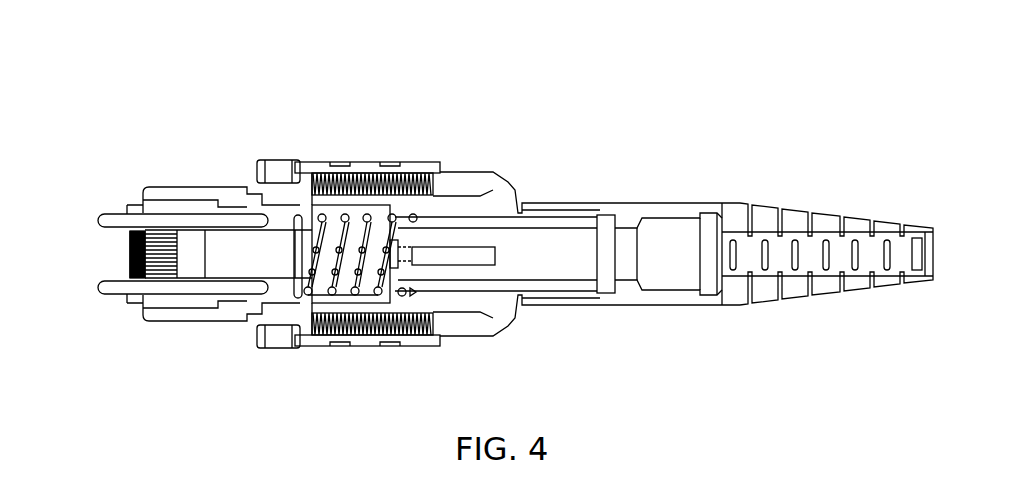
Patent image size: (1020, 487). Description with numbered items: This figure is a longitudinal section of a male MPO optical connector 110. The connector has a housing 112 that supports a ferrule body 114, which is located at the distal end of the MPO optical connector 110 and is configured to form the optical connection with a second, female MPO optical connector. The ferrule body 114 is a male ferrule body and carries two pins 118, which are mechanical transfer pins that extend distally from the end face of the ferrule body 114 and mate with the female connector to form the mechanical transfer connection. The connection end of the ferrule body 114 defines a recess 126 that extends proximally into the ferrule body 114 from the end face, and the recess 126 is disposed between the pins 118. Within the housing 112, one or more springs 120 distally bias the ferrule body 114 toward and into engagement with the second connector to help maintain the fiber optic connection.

The MPO optical connector 110 is at (612, 110).
The housing 112 is at (466, 160).
The ferrule body 114 is at (130, 196).
The pins 118 is at (134, 218).
The springs 120 is at (330, 197).
The recess 126 is at (130, 257).